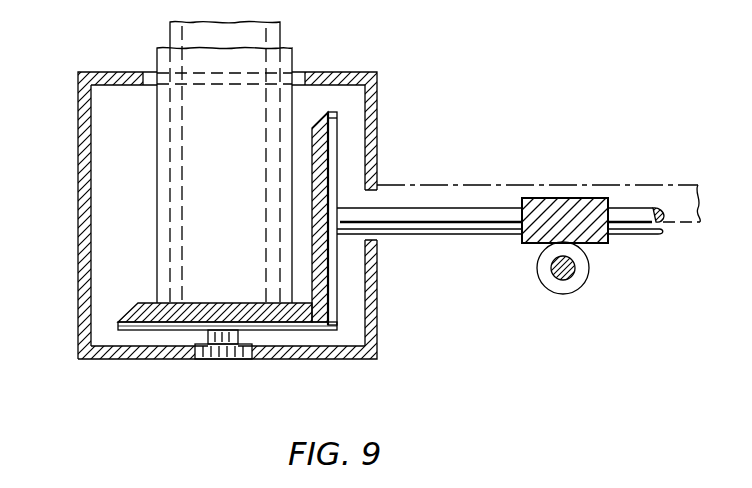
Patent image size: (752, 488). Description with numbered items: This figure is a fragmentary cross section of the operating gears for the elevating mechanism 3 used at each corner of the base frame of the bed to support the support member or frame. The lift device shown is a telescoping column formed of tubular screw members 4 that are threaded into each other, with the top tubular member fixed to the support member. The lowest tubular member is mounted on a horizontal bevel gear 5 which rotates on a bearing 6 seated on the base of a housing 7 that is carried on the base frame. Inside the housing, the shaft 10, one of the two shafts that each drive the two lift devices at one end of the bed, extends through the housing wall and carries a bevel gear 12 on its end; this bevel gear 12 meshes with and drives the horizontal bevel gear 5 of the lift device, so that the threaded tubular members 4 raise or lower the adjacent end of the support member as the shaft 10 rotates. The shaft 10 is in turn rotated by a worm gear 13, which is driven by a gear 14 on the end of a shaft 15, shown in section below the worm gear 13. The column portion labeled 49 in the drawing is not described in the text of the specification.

The elevating mechanism 3 is at (71, 152).
The tubular screw member 4 is at (273, 31).
The cylinder 49 is at (286, 62).
The horizontal bevel gear 5 is at (302, 360).
The bearing 6 is at (222, 360).
The housing 7 is at (377, 316).
The shaft 10 is at (628, 236).
The bevel gear 12 is at (338, 158).
The worm gear 13 is at (580, 206).
The gear 14 is at (578, 286).
The shaft 15 is at (553, 280).